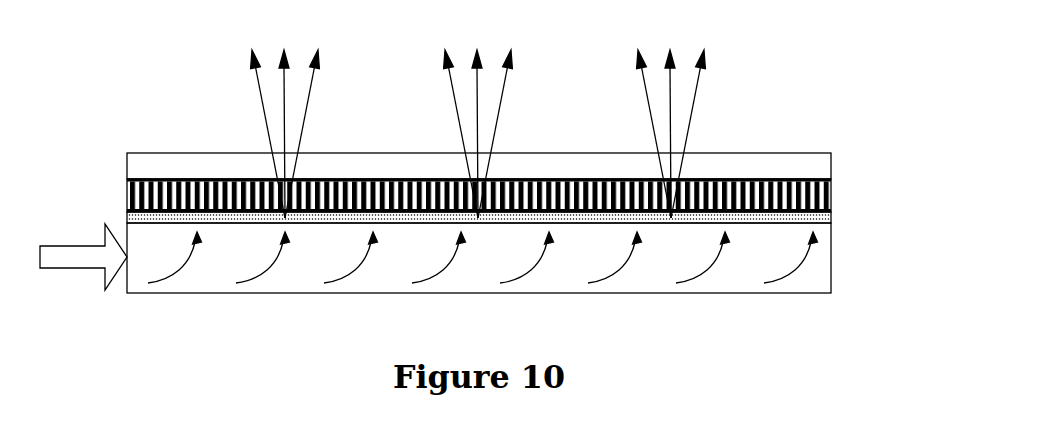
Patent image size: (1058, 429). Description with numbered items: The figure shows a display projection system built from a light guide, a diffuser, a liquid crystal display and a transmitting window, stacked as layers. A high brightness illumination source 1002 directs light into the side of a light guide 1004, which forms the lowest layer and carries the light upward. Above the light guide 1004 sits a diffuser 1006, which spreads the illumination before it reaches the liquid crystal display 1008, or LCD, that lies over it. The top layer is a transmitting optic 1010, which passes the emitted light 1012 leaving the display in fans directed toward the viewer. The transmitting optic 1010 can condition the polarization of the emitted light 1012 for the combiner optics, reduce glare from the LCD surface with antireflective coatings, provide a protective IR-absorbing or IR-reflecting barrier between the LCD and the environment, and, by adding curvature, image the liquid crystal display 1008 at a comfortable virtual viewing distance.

The high brightness illumination source 1002 is at (75, 257).
The light guide 1004 is at (820, 277).
The diffuser 1006 is at (825, 217).
The liquid crystal display 1008 is at (825, 185).
The transmitting optic 1010 is at (820, 162).
The emitted light 1012 is at (540, 98).